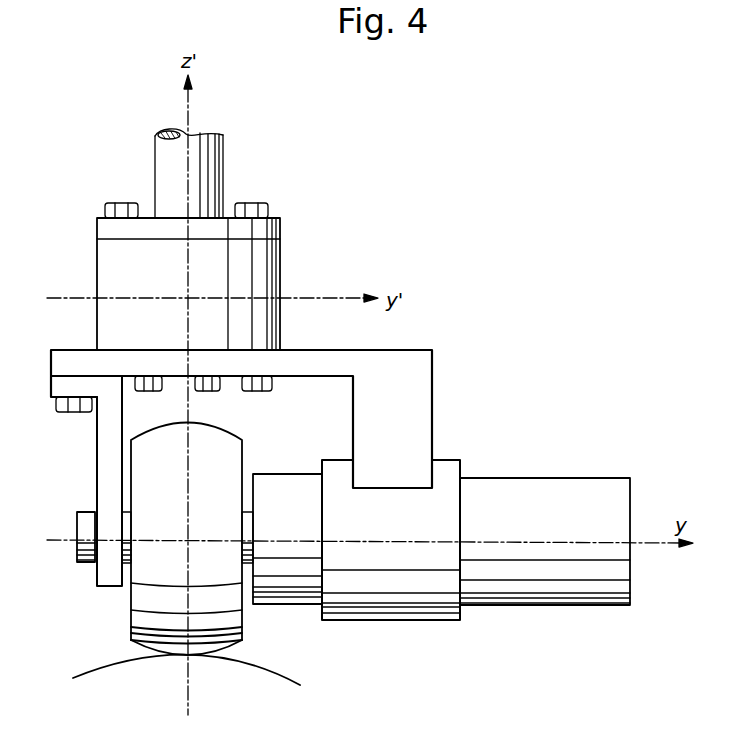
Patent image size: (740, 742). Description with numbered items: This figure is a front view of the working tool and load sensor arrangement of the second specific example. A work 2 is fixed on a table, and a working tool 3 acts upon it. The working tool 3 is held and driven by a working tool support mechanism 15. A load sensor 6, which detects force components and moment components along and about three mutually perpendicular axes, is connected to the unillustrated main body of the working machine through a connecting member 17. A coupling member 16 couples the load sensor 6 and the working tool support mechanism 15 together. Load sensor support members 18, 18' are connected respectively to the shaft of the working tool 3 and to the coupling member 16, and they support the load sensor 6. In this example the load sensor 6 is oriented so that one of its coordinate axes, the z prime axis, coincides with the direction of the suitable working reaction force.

The work 2 is at (112, 676).
The working tool 3 is at (140, 490).
The load sensor 6 is at (112, 266).
The working tool support mechanism 15 is at (441, 557).
The coupling member 16 is at (441, 492).
The connecting member 17 is at (160, 171).
The load sensor support member 18 is at (144, 481).
The load sensor support member 18' is at (272, 419).